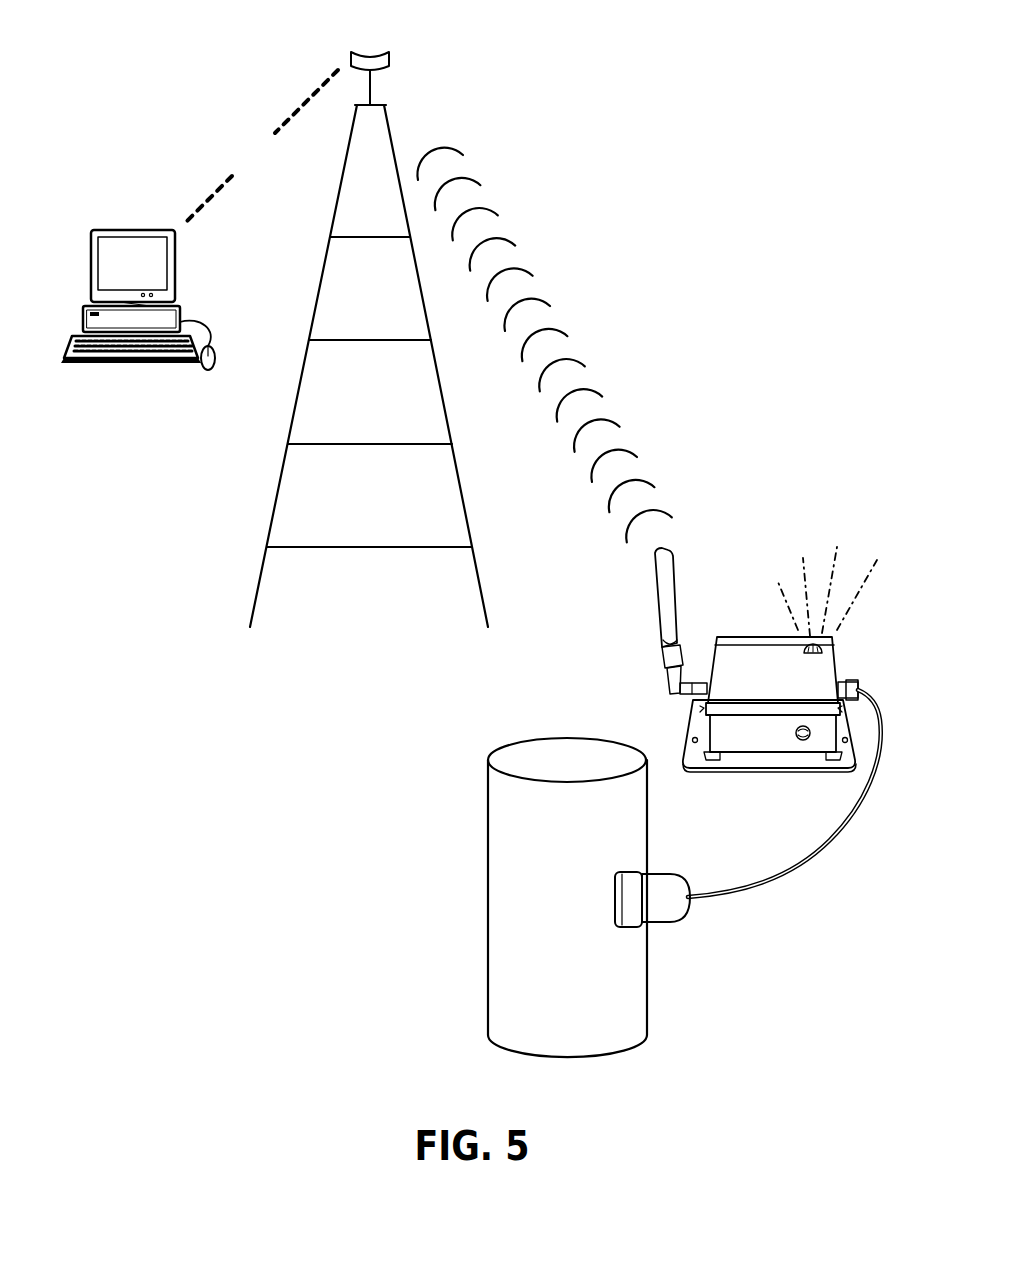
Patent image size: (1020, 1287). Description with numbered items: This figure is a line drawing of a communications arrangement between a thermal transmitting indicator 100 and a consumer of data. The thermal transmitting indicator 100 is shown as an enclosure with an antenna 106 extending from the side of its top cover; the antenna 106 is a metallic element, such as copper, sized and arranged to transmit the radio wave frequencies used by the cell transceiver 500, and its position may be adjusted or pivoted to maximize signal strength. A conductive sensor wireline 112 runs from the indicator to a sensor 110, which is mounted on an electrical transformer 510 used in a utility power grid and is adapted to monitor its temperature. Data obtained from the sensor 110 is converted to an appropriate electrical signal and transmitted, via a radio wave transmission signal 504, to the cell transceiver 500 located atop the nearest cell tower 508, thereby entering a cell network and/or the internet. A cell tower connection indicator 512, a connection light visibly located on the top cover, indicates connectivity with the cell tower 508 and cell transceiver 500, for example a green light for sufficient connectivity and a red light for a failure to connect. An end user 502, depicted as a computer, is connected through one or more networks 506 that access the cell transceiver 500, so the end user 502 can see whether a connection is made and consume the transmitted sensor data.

The thermal transmitting indicator 100 is at (770, 704).
The antenna 106 is at (655, 633).
The sensor 110 is at (657, 922).
The conductive sensor wireline 112 is at (735, 893).
The cell transceiver 500 is at (359, 44).
The end user 502 is at (182, 320).
The radio wave transmission signal 504 is at (556, 256).
The network 506 is at (260, 147).
The cell tower 508 is at (277, 500).
The electrical transformer 510 is at (477, 877).
The cell tower connection indicator 512 is at (803, 655).